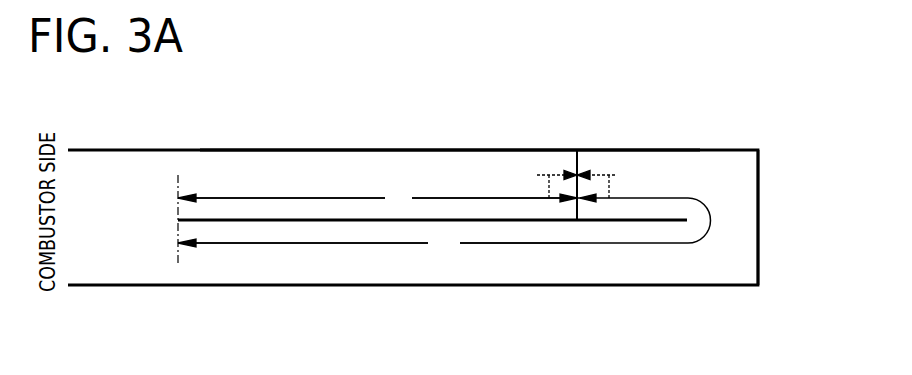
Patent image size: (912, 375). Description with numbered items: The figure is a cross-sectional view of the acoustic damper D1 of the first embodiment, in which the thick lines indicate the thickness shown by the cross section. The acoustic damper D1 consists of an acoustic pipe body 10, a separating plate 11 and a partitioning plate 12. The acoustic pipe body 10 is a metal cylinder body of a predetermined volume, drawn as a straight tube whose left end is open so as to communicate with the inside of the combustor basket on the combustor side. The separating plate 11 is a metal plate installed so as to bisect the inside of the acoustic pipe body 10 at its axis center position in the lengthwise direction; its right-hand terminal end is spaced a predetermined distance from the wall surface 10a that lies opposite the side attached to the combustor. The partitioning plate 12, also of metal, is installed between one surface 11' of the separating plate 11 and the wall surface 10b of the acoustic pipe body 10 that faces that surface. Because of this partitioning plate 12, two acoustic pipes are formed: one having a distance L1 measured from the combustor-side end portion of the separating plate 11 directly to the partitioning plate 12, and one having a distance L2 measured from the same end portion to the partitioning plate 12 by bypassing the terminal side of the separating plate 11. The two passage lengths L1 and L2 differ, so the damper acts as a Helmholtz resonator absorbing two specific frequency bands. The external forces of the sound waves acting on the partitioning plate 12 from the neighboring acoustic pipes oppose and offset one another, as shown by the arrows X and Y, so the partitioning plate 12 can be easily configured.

The acoustic pipe body 10 is at (603, 150).
The wall surface 10a is at (758, 206).
The wall surface 10b is at (649, 150).
The separating plate 11 is at (432, 153).
The one surface of the separating plate 11' is at (444, 162).
The partitioning plate 12 is at (577, 157).
The acoustic damper D1 is at (392, 130).
The distance L1 is at (377, 220).
The distance L2 is at (387, 226).
The arrow X is at (549, 198).
The arrow Y is at (609, 198).